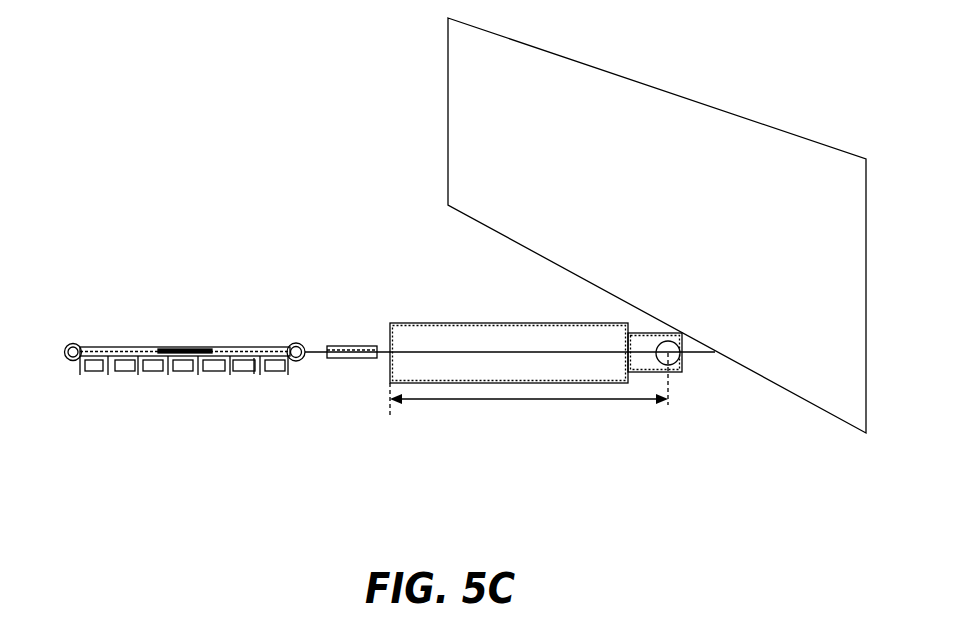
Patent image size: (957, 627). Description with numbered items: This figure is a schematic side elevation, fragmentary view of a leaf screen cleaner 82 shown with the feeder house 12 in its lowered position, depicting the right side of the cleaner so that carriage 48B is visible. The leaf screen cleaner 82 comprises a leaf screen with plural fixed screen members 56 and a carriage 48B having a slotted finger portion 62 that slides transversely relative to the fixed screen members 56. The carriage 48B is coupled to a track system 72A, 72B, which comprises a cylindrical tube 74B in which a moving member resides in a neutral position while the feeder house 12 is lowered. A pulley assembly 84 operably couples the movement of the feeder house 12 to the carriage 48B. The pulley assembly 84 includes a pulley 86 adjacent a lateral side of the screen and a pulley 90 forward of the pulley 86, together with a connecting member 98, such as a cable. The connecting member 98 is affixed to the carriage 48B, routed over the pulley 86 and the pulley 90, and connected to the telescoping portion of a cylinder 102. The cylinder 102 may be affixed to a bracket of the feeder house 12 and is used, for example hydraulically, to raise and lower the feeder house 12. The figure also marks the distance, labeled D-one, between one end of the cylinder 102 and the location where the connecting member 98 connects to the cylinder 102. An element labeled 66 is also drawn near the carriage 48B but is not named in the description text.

The feeder house 12 is at (652, 207).
The leaf screen cleaner 82 is at (332, 100).
The carriage 48B is at (107, 349).
The pulley 86 is at (170, 349).
The cylindrical tube 74B is at (65, 343).
The track system 72A is at (65, 382).
The track system 72B is at (298, 382).
The slotted finger portion 62 is at (125, 373).
The screen member 56 is at (198, 373).
The link 66 is at (262, 386).
The pulley assembly 84 is at (394, 466).
The connecting member 98 is at (420, 351).
The pulley 90 is at (339, 346).
The cylinder 102 is at (458, 323).